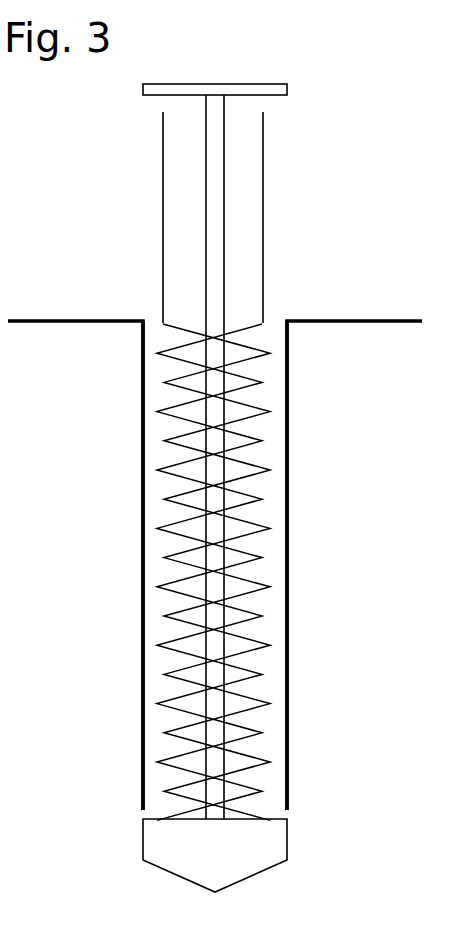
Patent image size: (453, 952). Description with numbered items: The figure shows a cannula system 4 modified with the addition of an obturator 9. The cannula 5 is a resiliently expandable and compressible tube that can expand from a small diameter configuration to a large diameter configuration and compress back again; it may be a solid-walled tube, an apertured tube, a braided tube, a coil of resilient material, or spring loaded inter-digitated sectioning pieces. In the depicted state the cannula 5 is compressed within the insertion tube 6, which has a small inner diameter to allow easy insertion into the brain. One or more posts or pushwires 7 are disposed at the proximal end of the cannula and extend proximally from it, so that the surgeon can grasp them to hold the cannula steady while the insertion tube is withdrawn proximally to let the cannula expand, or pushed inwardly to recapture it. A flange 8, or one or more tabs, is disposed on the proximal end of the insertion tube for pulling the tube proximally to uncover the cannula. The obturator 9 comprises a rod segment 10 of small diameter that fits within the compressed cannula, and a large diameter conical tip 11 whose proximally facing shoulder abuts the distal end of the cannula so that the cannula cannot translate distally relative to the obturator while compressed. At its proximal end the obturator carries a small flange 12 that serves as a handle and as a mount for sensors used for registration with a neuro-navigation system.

The ground / soil 4 is at (225, 544).
The cannula 5 is at (265, 578).
The insertion tube 6 is at (290, 508).
The posts or pushwires 7 is at (267, 228).
The flange 8 is at (335, 320).
The obturator 9 is at (255, 466).
The rod segment 10 is at (225, 185).
The conical tip 11 is at (283, 853).
The flange 12 is at (278, 90).